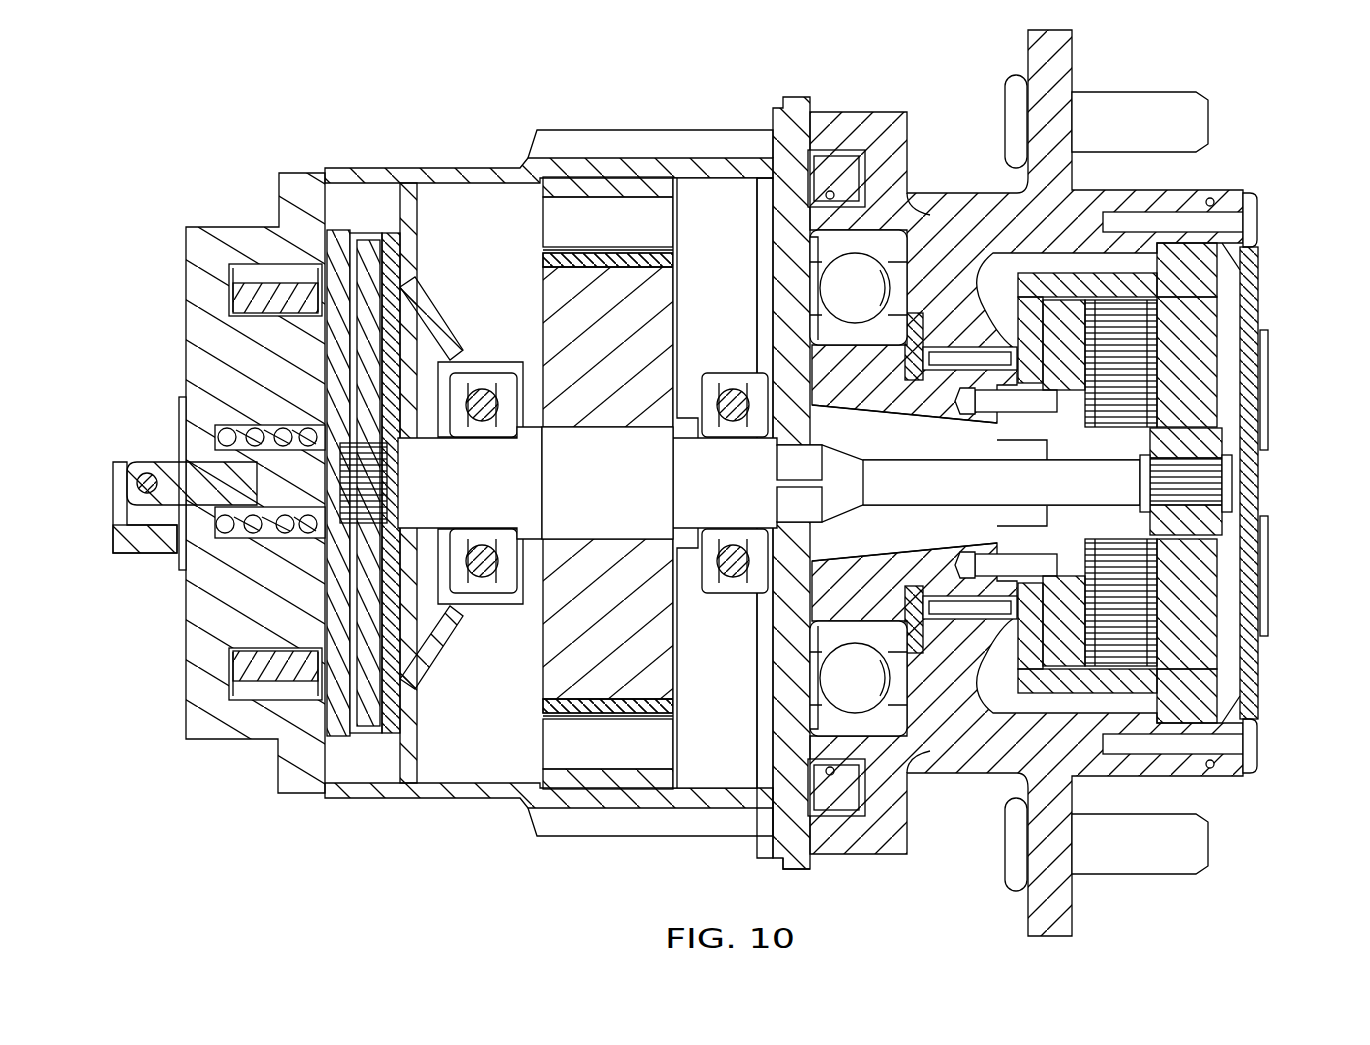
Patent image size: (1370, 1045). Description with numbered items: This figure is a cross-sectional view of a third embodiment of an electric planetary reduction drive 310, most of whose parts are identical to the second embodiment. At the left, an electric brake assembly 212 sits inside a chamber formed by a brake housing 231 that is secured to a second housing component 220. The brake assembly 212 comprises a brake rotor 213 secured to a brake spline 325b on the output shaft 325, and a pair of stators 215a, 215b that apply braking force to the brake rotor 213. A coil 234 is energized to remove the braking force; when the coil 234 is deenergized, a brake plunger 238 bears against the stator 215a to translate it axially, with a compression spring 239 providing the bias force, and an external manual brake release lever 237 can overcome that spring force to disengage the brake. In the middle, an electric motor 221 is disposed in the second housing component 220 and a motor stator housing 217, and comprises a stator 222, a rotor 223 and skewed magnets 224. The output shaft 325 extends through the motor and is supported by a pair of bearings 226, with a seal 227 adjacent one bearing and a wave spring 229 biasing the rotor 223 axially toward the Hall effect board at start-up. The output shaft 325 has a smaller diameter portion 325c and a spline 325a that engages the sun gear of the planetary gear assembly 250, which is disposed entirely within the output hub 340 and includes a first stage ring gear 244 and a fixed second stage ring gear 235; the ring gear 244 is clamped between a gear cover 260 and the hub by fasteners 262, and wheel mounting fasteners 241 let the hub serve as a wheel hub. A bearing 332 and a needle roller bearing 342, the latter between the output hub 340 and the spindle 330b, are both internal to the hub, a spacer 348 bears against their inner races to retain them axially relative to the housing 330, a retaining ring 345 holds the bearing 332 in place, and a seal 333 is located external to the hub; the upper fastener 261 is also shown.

The electric planetary reduction drive 310 is at (718, 483).
The electric brake assembly 212 is at (618, 476).
The brake rotor 213 is at (368, 730).
The stator 215a is at (338, 730).
The stator 215b is at (388, 730).
The motor stator housing 217 is at (690, 165).
The second housing component 220 is at (430, 163).
The electric motor 221 is at (518, 276).
The stator 222 is at (605, 185).
The rotor 223 is at (598, 420).
The skewed magnets 224 is at (590, 714).
The bearings 226 is at (487, 558).
The seal 227 is at (800, 548).
The wave spring 229 is at (799, 467).
The brake housing 231 is at (196, 360).
The coil 234 is at (260, 285).
The second stage ring gear 235 is at (965, 358).
The external manual brake release lever 237 is at (128, 532).
The brake plunger 238 is at (176, 480).
The compression spring 239 is at (222, 530).
The wheel mounting fasteners 241 is at (1160, 136).
The first stage ring gear 244 is at (1180, 715).
The planetary gear assembly 250 is at (1179, 527).
The gear cover 260 is at (1253, 283).
The upper bolt 261 is at (1212, 200).
The fasteners 262 is at (1250, 760).
The output shaft 325 is at (740, 481).
The spline 325a is at (1200, 490).
The brake spline 325b is at (365, 486).
The smaller diameter portion 325c is at (898, 450).
The housing 330 is at (806, 836).
The spindle 330b is at (946, 600).
The bearing 332 is at (842, 293).
The seal 333 is at (835, 168).
The output hub 340 is at (1026, 483).
The needle roller bearing 342 is at (963, 372).
The retaining ring 345 is at (830, 235).
The spacer 348 is at (893, 412).